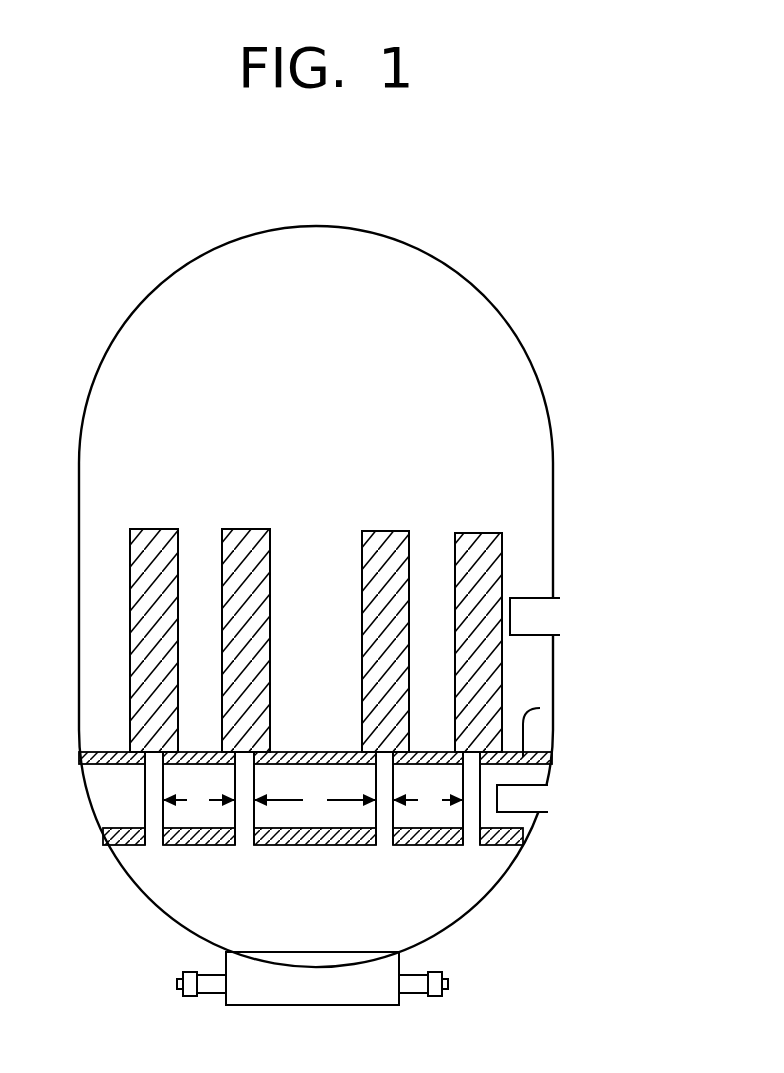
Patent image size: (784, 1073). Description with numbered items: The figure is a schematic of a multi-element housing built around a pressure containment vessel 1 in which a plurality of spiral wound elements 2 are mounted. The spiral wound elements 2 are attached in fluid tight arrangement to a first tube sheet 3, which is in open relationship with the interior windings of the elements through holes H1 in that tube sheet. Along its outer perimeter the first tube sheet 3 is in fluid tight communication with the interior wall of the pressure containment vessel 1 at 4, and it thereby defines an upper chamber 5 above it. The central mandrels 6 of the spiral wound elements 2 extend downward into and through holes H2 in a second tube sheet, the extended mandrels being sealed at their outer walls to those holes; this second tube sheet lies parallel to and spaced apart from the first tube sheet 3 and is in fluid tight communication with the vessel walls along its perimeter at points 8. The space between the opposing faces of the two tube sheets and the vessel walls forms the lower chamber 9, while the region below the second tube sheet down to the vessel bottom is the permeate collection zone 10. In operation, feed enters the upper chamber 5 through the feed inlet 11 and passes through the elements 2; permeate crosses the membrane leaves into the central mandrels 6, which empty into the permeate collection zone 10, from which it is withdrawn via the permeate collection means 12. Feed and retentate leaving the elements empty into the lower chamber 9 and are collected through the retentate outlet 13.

The pressure containment vessel 1 is at (509, 322).
The spiral wound elements 2 is at (503, 577).
The first tube sheet 3 is at (540, 708).
The fluid tight communication point of first tube sheet with vessel wall 4 is at (540, 760).
The upper chamber 5 is at (518, 401).
The central mandrels 6 is at (313, 800).
The fluid tight communication points of second tube sheet with vessel wall 8 is at (105, 837).
The lower chamber 9 is at (113, 807).
The permeate collection zone 10 is at (202, 915).
The feed inlet 11 is at (552, 617).
The permeate collection means 12 is at (173, 984).
The retentate outlet 13 is at (513, 796).
The holes in first tube sheet H1 is at (138, 756).
The holes in second tube sheet H2 is at (162, 846).